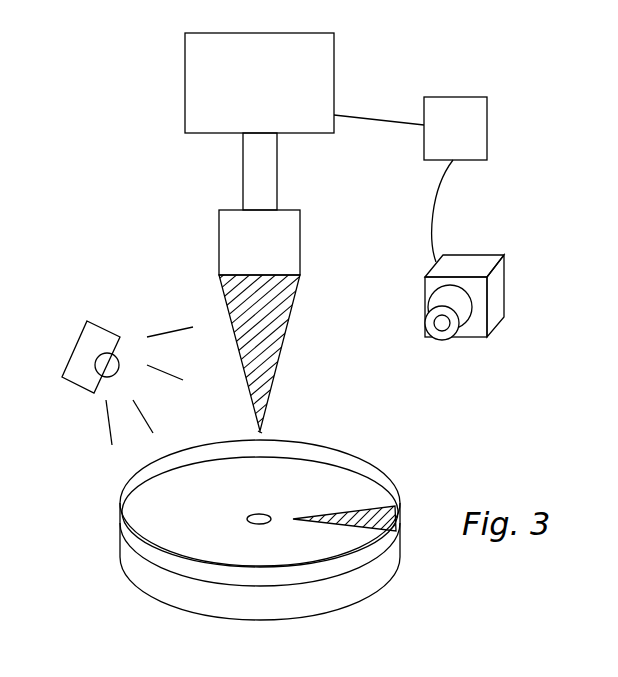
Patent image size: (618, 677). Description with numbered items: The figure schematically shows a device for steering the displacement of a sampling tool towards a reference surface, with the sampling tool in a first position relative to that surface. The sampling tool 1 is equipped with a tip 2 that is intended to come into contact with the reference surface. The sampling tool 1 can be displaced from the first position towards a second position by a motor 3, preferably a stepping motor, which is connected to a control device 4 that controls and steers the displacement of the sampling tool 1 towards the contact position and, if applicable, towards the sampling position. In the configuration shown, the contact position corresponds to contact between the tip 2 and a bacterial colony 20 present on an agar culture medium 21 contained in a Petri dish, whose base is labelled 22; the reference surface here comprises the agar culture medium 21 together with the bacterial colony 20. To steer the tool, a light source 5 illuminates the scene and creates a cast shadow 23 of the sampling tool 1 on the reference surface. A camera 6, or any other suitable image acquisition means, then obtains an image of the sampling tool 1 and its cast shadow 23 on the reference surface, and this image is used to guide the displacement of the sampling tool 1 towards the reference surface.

The sampling tool 1 is at (332, 254).
The tip 2 is at (262, 433).
The motor 3 is at (303, 57).
The control device 4 is at (460, 129).
The light source 5 is at (83, 340).
The camera 6 is at (497, 295).
The bacterial colony 20 is at (258, 516).
The agar culture medium 21 is at (350, 492).
The base of the Petri dish 22 is at (126, 537).
The cast shadow 23 is at (366, 518).